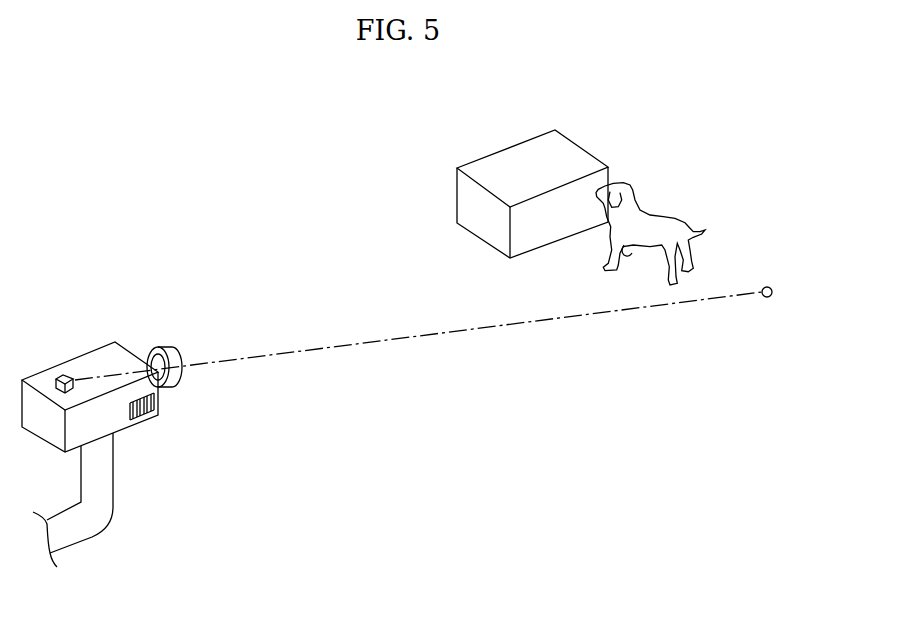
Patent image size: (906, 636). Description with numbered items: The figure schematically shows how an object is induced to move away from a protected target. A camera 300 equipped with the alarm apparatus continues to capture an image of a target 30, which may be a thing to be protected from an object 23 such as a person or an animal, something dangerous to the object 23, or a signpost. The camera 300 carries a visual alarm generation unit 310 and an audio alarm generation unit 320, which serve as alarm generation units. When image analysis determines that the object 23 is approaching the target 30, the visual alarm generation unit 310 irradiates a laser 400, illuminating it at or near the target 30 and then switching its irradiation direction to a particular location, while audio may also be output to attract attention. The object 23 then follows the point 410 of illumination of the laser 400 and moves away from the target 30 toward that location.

The camera 300 is at (115, 342).
The visual alarm generation unit 310 is at (63, 375).
The audio alarm generation unit 320 is at (148, 410).
The laser 400 is at (596, 315).
The point of illumination 410 is at (767, 287).
The target 30 is at (528, 143).
The object 23 is at (670, 217).